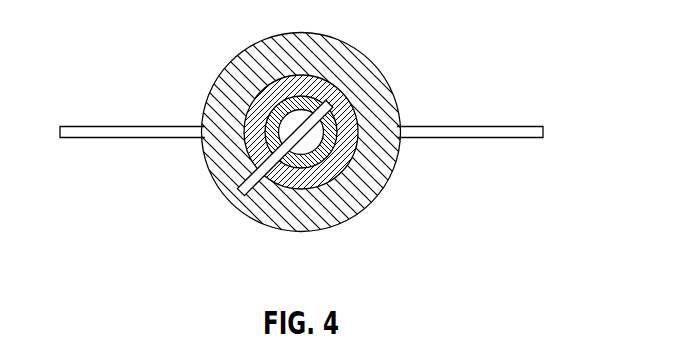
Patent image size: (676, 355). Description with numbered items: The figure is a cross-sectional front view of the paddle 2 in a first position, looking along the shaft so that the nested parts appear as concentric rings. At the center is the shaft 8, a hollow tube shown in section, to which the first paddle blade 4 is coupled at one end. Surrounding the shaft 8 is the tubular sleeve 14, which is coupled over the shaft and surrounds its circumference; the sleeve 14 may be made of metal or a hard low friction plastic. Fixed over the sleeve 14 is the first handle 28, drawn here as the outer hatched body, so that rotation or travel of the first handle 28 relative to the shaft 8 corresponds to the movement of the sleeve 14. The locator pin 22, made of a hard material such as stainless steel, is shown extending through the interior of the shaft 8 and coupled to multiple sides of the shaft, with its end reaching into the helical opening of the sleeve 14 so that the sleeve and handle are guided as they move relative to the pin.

The paddle 2 is at (301, 140).
The first paddle blade 4 is at (468, 131).
The shaft 8 is at (294, 97).
The sleeve 14 is at (273, 80).
The locator pin 22 is at (262, 182).
The first handle 28 is at (363, 93).